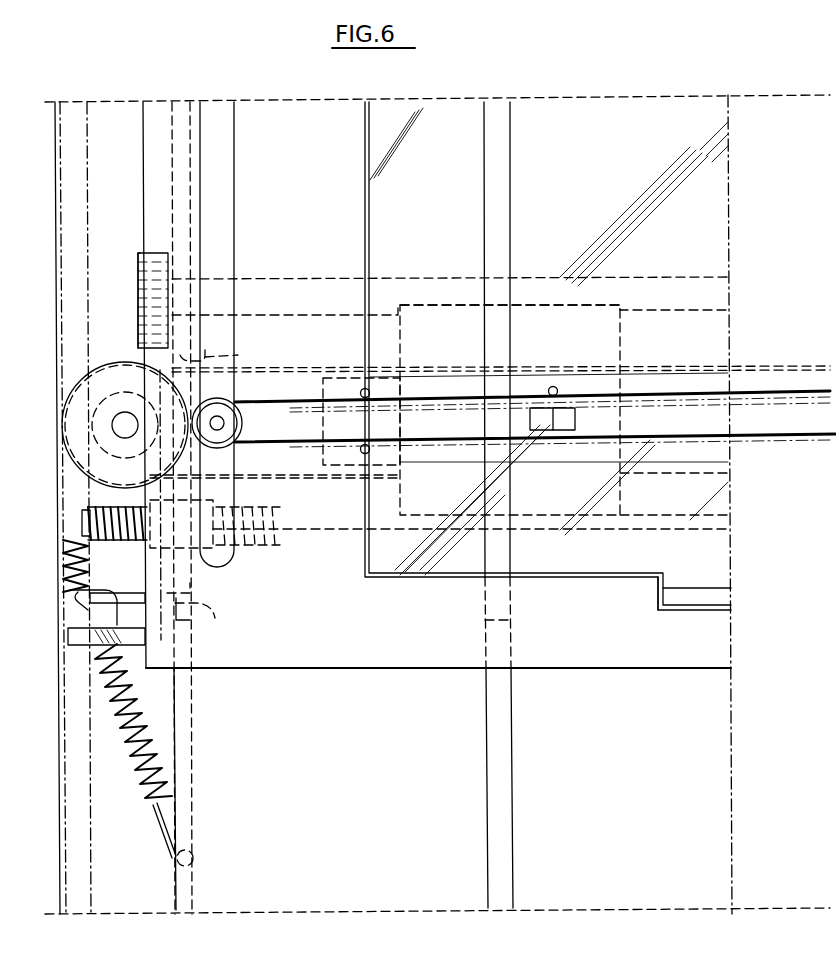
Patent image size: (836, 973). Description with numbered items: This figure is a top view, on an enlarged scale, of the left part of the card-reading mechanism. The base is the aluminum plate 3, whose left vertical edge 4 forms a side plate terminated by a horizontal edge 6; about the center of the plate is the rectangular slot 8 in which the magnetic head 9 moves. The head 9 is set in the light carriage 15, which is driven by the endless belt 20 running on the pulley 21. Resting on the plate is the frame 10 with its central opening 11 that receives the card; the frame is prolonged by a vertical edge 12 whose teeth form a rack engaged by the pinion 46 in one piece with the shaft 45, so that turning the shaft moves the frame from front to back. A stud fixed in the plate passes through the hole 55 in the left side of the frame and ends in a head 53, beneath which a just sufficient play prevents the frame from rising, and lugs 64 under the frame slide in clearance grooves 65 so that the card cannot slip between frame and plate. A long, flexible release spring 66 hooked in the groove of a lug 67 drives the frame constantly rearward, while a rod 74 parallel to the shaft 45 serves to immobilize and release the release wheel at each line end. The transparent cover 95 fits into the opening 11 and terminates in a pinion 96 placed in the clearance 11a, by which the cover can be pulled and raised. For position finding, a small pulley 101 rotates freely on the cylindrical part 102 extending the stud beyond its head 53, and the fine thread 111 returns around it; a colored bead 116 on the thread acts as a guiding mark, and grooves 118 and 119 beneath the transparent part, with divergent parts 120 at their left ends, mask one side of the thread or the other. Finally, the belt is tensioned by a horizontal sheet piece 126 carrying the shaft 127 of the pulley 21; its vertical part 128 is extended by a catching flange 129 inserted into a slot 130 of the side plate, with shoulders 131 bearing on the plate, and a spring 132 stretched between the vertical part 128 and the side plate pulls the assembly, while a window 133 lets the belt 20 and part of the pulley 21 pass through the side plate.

The plate 3 is at (576, 845).
The vertical edge 4 is at (173, 697).
The horizontal edge 6 is at (108, 735).
The rectangular slot 8 is at (535, 432).
The magnetic head 9 is at (563, 430).
The frame 10 is at (382, 630).
The central opening 11 is at (369, 232).
The clearance 11a is at (680, 610).
The vertical edge 12 is at (143, 210).
The carriage 15 is at (622, 330).
The endless belt 20 is at (315, 368).
The pulley 21 is at (115, 380).
The shaft 45 is at (297, 279).
The pinion 46 is at (140, 298).
The head 53 is at (220, 447).
The hole 55 is at (234, 215).
The lug 64 is at (500, 620).
The clearance groove 65 is at (500, 762).
The release spring 66 is at (65, 568).
The lug 67 is at (68, 638).
The rod 74 is at (335, 530).
The transparent cover 95 is at (587, 167).
The pinion 96 is at (712, 597).
The small pulley 101 is at (215, 410).
The cylindrical part 102 is at (225, 423).
The thread 111 is at (686, 355).
The bead 116 is at (553, 387).
The groove 118 is at (633, 403).
The groove 119 is at (600, 442).
The divergent part 120 is at (372, 393).
The horizontal sheet piece 126 is at (110, 496).
The shaft 127 is at (120, 425).
The vertical part 128 is at (132, 600).
The catching flange 129 is at (215, 612).
The slot 130 is at (196, 586).
The shoulder 131 is at (185, 605).
The spring 132 is at (140, 742).
The window 133 is at (232, 357).